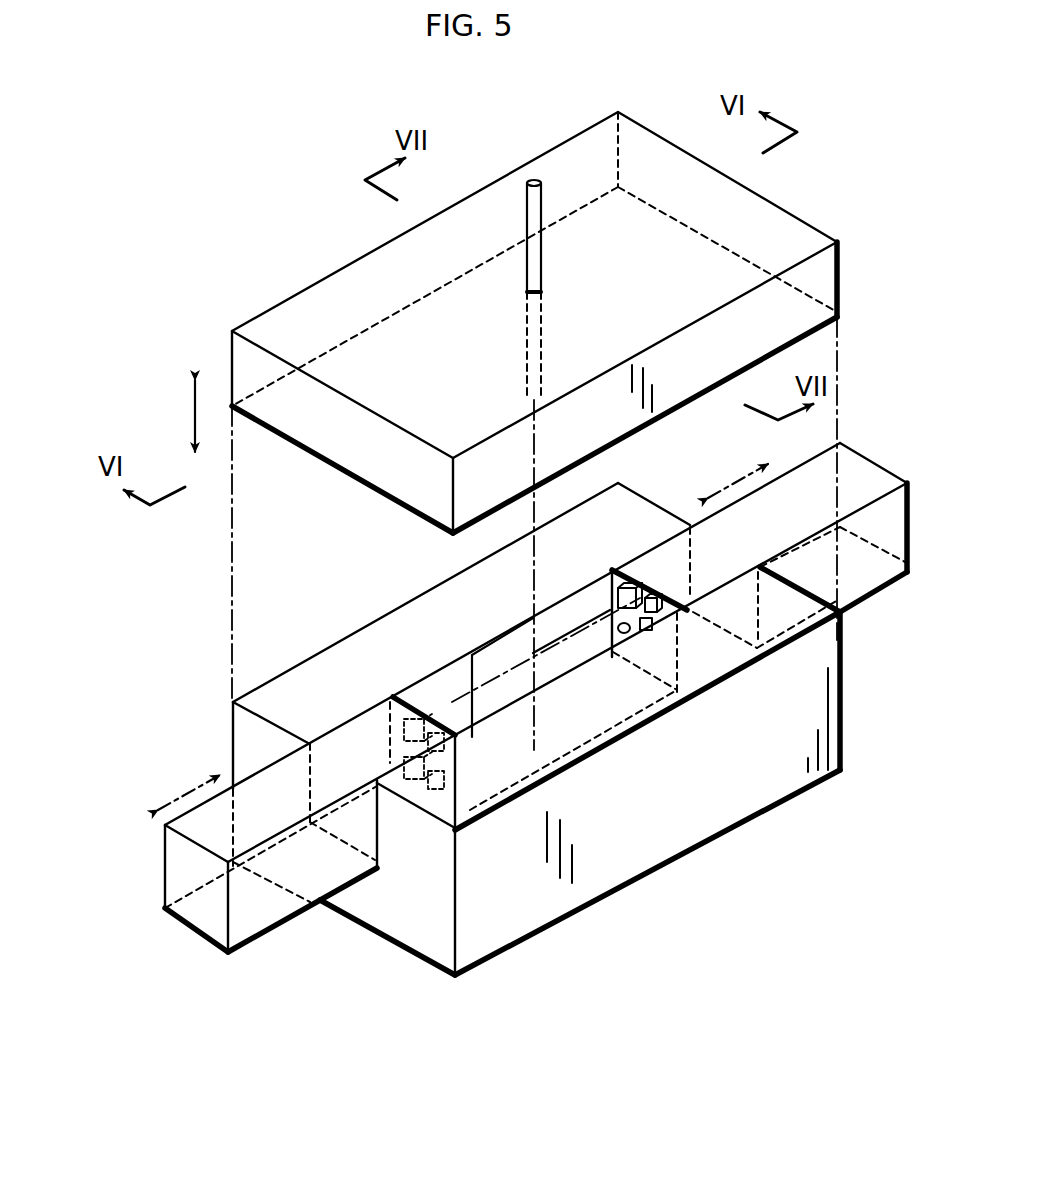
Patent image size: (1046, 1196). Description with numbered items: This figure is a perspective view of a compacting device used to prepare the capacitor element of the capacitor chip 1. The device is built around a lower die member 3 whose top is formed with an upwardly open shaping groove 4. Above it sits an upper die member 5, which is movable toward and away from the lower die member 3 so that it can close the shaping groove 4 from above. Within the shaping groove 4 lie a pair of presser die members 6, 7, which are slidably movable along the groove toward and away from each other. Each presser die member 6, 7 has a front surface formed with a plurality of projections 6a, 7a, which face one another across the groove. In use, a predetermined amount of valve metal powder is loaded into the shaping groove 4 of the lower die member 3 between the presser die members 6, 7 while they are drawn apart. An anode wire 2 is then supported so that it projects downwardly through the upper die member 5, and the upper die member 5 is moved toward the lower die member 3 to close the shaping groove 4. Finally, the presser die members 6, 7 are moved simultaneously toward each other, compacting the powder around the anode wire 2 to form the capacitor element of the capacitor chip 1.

The capacitor chip 1 is at (500, 656).
The anode wire 2 is at (523, 203).
The lower die member 3 is at (680, 840).
The shaping groove 4 is at (427, 693).
The upper die member 5 is at (330, 302).
The presser die member 6 is at (268, 792).
The projections 6a is at (457, 750).
The presser die member 7 is at (835, 480).
The projections 7a is at (658, 600).